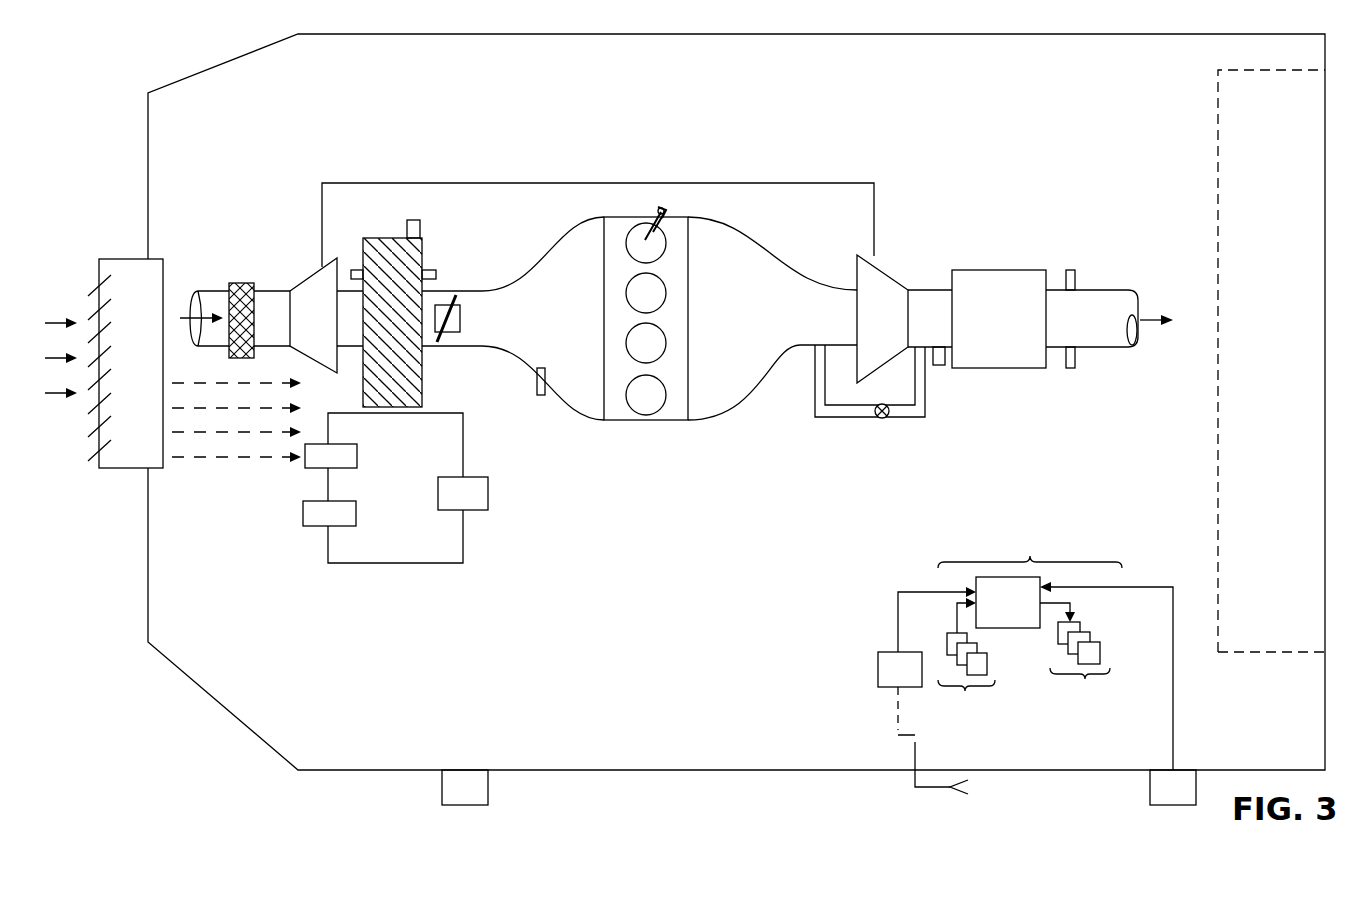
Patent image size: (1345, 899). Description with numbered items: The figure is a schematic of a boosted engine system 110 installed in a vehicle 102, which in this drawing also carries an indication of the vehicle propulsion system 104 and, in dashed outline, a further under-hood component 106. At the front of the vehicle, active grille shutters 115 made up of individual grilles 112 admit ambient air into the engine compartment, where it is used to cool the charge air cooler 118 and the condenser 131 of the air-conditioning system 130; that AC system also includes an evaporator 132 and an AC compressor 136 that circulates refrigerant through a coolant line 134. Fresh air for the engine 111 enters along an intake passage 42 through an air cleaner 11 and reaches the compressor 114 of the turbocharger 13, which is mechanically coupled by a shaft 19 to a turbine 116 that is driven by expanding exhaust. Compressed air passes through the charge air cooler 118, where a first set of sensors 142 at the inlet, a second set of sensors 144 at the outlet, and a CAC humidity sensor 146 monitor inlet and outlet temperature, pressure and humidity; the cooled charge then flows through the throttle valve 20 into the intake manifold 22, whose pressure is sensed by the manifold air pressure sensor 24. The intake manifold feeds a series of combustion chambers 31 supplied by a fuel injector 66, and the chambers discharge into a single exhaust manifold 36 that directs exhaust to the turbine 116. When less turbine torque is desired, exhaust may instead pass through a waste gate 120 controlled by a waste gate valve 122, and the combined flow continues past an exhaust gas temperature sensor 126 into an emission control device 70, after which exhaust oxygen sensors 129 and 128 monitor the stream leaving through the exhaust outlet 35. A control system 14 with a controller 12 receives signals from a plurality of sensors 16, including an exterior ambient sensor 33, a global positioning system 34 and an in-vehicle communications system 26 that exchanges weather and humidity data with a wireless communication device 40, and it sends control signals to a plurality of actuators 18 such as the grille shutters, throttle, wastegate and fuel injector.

The vehicle 102 is at (672, 34).
The propulsion system 104 is at (90, 184).
The boosted engine system 110 is at (1080, 113).
The energy storage device 106 is at (1244, 359).
The active grille shutters 115 is at (125, 327).
The individual grilles 112 is at (92, 422).
The air cleaner 11 is at (240, 283).
The intake passage 42 is at (222, 348).
The compressor 114 is at (299, 327).
The shaft 19 is at (784, 183).
The turbocharger 13 is at (370, 204).
The charge air cooler 118 is at (422, 380).
The CAC humidity sensor 146 is at (415, 220).
The first set of sensors 142 is at (356, 270).
The second set of sensors 144 is at (436, 268).
The intake manifold 22 is at (550, 331).
The combustion chambers 31 is at (655, 245).
The fuel injector 66 is at (668, 210).
The throttle valve 20 is at (462, 308).
The manifold air pressure sensor 24 is at (536, 375).
The engine 111 is at (688, 303).
The exhaust manifold 36 is at (738, 331).
The turbine 116 is at (868, 327).
The waste gate 120 is at (813, 404).
The waste gate valve 122 is at (877, 419).
The exhaust gas temperature sensor 126 is at (940, 365).
The emission control device 70 is at (985, 270).
The exhaust oxygen sensor 129 is at (1072, 270).
The exhaust oxygen sensor 128 is at (1070, 368).
The exhaust passage 35 is at (1115, 290).
The coolant line 134 is at (447, 565).
The air-conditioning system 130 is at (485, 448).
The condenser 131 is at (317, 465).
The evaporator 132 is at (316, 523).
The AC compressor 136 is at (449, 503).
The exterior sensor 33 is at (455, 797).
The global positioning system 34 is at (1163, 797).
The control system 14 is at (1030, 537).
The controller 12 is at (998, 612).
The sensors 16 is at (976, 673).
The actuators 18 is at (1093, 672).
The in-vehicle communications system 26 is at (890, 679).
The wireless communication device 40 is at (928, 792).